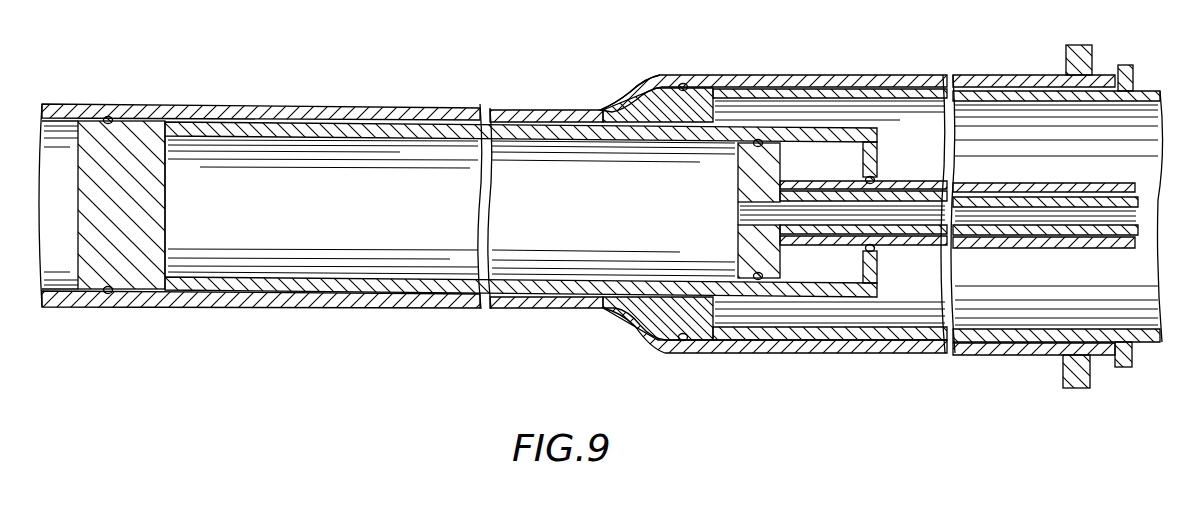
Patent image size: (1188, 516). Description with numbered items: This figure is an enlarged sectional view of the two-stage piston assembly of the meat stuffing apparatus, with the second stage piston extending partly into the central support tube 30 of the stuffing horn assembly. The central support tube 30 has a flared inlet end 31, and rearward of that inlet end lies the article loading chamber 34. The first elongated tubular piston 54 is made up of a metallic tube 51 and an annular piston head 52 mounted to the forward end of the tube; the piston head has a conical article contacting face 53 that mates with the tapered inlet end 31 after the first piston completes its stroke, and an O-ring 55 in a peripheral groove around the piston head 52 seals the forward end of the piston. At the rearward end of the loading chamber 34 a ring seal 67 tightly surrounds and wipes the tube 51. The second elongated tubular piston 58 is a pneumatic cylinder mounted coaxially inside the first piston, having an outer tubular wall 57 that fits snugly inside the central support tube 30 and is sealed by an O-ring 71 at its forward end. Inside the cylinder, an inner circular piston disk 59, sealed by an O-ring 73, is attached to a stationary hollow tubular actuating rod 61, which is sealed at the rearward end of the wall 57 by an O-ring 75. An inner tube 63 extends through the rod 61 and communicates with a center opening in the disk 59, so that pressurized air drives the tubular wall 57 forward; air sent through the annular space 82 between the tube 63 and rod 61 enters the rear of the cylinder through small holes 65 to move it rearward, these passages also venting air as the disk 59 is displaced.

The central support tube 30 is at (505, 304).
The flared inlet end 31 is at (634, 324).
The article loading chamber 34 is at (830, 333).
The metallic tube 51 is at (880, 90).
The annular piston head 52 is at (662, 95).
The article contacting face 53 is at (642, 102).
The first elongated tubular piston 54 is at (826, 82).
The O-ring 55 is at (685, 84).
The outer tubular wall 57 is at (318, 133).
The second elongated tubular piston 58 is at (250, 117).
The inner circular piston disk 59 is at (743, 182).
The hollow tubular actuating rod 61 is at (914, 188).
The inner tube 63 is at (966, 226).
The small holes 65 is at (828, 184).
The ring seal 67 is at (1127, 66).
The O-ring 71 is at (110, 116).
The O-ring 73 is at (759, 140).
The O-ring 75 is at (873, 252).
The annular space 82 is at (898, 193).